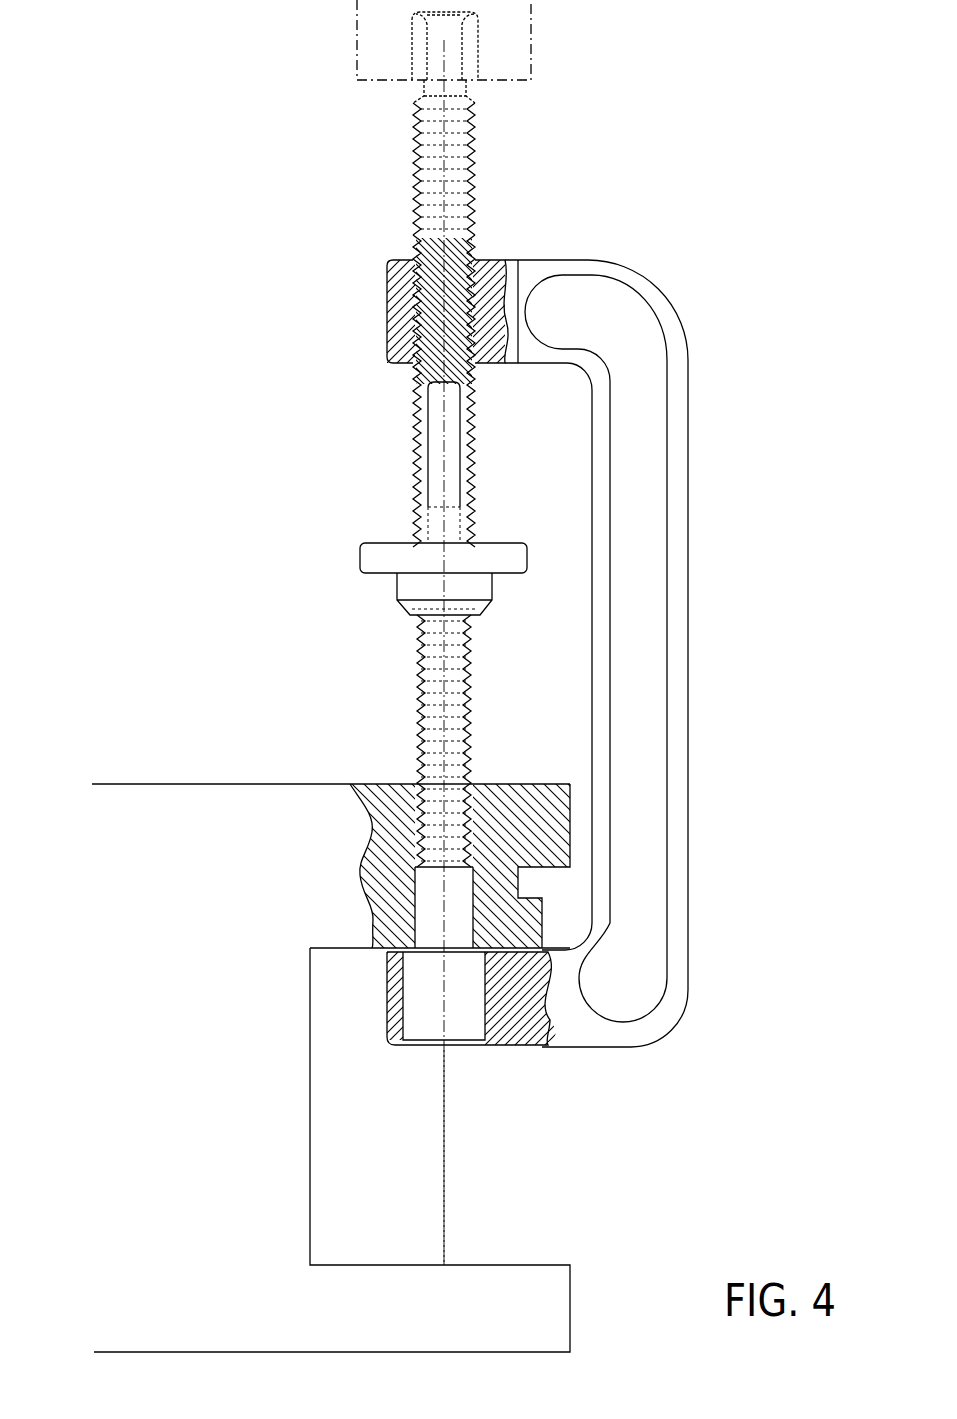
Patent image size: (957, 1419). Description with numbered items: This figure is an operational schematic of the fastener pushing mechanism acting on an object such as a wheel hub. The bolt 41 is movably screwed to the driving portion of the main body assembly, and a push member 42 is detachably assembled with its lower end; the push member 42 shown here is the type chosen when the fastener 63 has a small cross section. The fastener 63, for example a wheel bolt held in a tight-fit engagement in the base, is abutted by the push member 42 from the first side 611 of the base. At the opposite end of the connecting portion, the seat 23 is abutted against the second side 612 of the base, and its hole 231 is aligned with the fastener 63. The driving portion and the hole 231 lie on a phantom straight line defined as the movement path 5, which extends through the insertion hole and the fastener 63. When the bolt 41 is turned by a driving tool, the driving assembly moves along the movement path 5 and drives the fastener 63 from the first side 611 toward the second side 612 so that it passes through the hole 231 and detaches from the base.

The bolt 41 is at (466, 162).
The push member 42 is at (383, 557).
The first side 611 is at (320, 783).
The second side 612 is at (350, 950).
The fastener 63 is at (455, 909).
The seat 23 is at (517, 1030).
The hole 231 is at (452, 1015).
The movement path 5 is at (444, 1222).